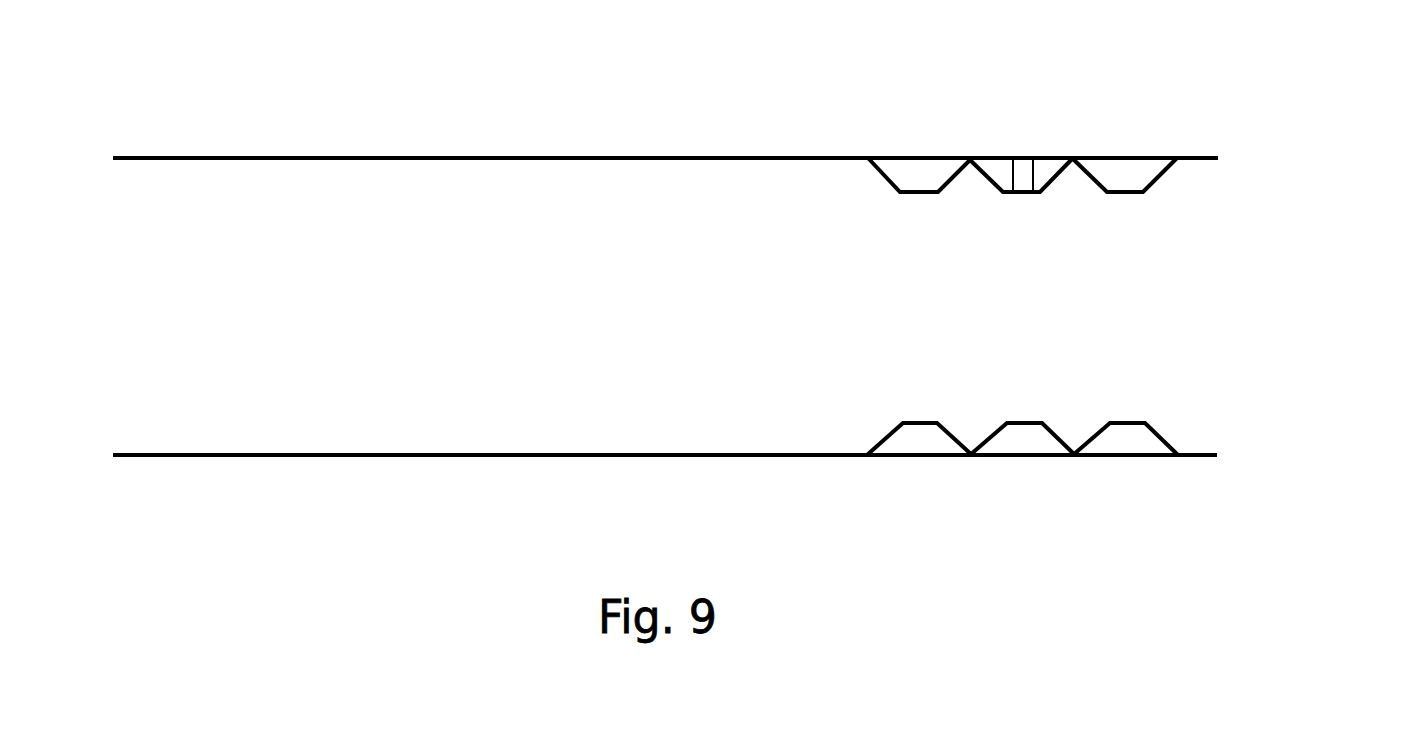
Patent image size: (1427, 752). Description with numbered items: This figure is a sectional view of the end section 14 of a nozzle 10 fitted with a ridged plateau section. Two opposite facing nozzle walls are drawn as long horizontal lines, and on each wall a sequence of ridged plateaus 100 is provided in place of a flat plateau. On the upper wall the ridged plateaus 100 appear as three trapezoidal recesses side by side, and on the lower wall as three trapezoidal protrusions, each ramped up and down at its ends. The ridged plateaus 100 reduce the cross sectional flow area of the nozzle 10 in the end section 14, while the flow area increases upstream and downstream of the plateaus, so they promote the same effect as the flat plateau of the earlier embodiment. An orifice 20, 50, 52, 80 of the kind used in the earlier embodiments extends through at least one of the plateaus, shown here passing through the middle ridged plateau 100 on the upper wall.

The nozzle 10 is at (330, 110).
The end section 14 is at (1200, 306).
The ridged plateaus 100 is at (998, 167).
The orifice 20 is at (1113, 103).
The orifice 50 is at (1020, 175).
The orifice 52 is at (1020, 175).
The orifice 80 is at (1020, 175).